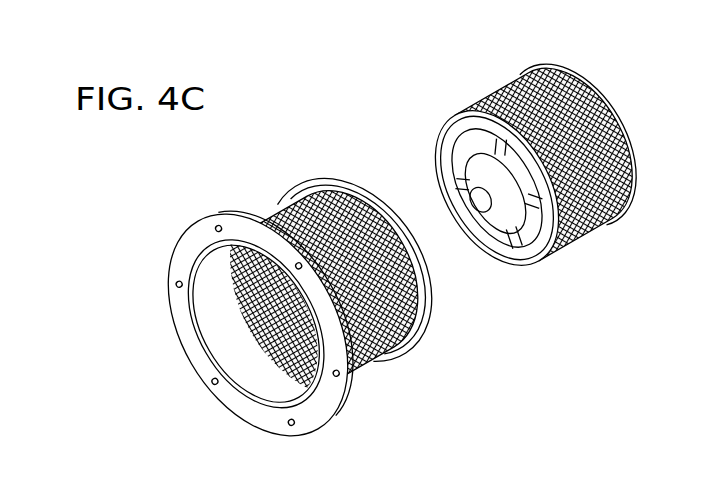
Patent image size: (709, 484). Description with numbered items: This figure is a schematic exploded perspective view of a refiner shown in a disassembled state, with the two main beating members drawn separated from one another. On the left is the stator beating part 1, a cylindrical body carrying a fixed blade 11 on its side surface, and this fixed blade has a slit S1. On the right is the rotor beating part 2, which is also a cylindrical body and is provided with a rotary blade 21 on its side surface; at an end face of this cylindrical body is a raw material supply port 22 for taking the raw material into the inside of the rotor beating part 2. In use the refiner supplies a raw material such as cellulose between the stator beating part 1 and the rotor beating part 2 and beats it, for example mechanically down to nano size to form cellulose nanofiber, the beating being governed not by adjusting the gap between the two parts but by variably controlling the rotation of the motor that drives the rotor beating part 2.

The stator beating part 1 is at (298, 276).
The fixed blade 11 is at (330, 220).
The slit S1 is at (270, 360).
The rotor beating part 2 is at (536, 179).
The rotary blade 21 is at (567, 143).
The raw material supply port 22 is at (484, 233).